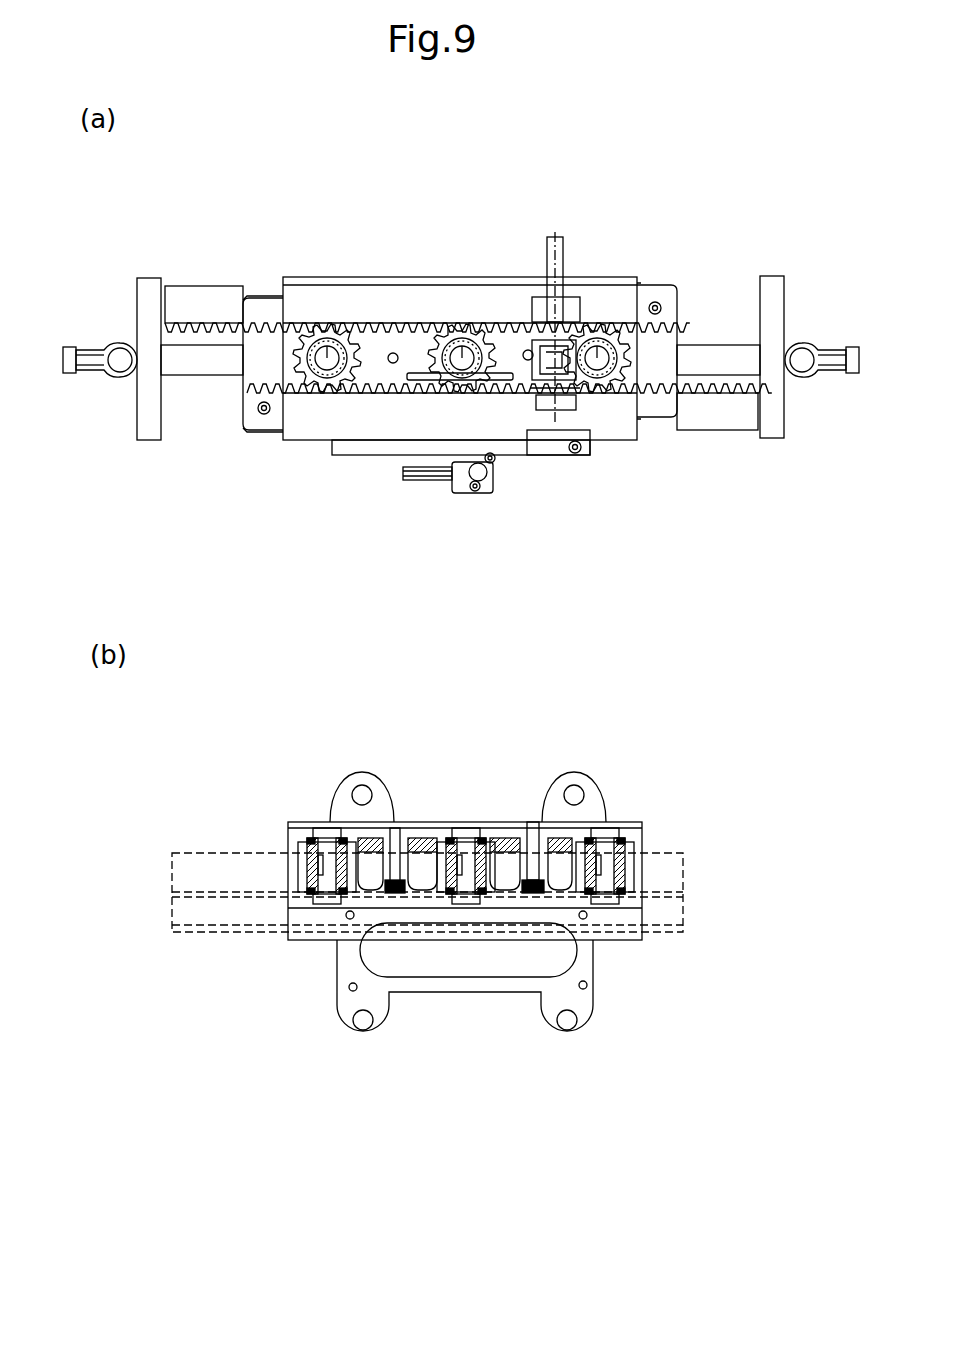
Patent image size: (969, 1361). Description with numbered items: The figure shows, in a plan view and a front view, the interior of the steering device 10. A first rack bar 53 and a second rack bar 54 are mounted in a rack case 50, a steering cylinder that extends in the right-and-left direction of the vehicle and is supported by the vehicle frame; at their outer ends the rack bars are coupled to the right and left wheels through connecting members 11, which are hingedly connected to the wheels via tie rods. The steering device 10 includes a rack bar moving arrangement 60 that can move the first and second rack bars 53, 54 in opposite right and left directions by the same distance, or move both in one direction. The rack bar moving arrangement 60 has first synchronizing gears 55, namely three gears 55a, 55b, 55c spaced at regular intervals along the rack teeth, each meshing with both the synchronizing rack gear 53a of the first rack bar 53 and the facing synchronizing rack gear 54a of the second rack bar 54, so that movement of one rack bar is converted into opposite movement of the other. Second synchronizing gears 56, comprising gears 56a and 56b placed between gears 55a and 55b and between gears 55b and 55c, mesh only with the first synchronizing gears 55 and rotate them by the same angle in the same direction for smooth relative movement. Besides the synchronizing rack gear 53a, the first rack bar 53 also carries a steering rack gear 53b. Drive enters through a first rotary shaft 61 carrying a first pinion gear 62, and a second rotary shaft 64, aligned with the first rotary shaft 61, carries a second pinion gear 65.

The steering device 10 is at (461, 646).
The connecting member 11 is at (120, 365).
The rack case 50 is at (300, 285).
The first rack bar 53 is at (457, 602).
The synchronizing rack gear 53a is at (208, 335).
The steering rack gear 53b is at (664, 922).
The second rack bar 54 is at (509, 393).
The synchronizing rack gear 54a is at (722, 380).
The first synchronizing gears 55 is at (462, 646).
The first synchronizing gear 55a is at (329, 350).
The first synchronizing gear 55b is at (462, 352).
The first synchronizing gear 55c is at (587, 648).
The second synchronizing gears 56 is at (462, 616).
The second synchronizing gear 56a is at (393, 363).
The second synchronizing gear 56b is at (540, 395).
The rack bar moving arrangement 60 is at (599, 423).
The first rotary shaft 61 is at (558, 262).
The first pinion gear 62 is at (540, 305).
The second rotary shaft 64 is at (580, 390).
The second pinion gear 65 is at (580, 455).